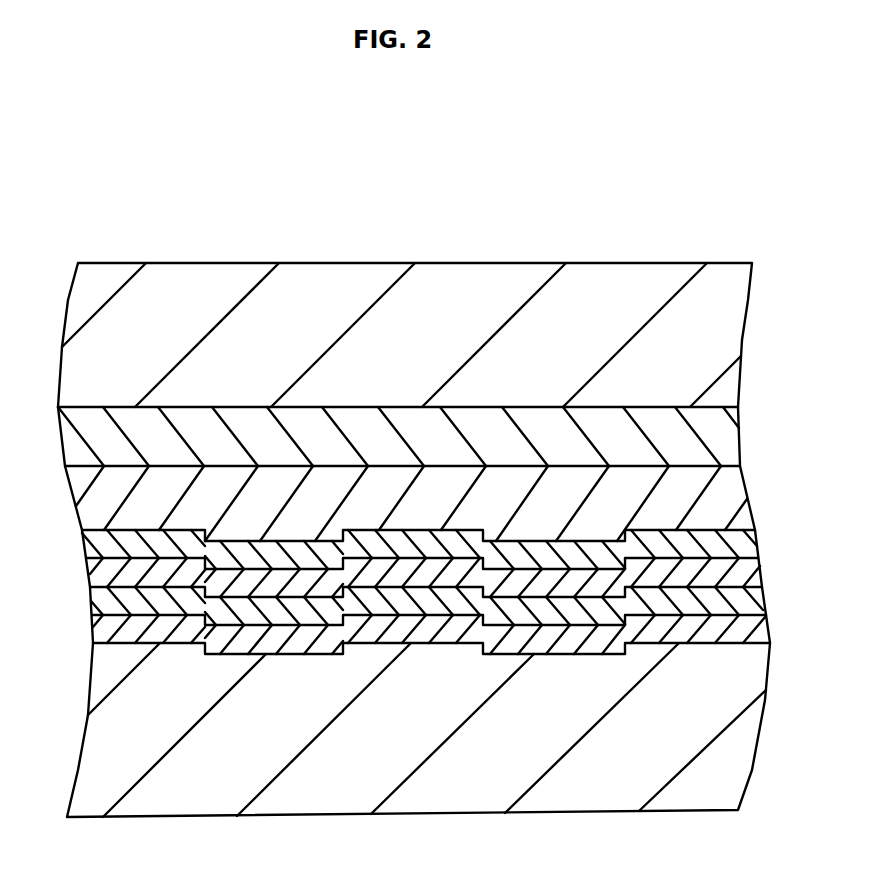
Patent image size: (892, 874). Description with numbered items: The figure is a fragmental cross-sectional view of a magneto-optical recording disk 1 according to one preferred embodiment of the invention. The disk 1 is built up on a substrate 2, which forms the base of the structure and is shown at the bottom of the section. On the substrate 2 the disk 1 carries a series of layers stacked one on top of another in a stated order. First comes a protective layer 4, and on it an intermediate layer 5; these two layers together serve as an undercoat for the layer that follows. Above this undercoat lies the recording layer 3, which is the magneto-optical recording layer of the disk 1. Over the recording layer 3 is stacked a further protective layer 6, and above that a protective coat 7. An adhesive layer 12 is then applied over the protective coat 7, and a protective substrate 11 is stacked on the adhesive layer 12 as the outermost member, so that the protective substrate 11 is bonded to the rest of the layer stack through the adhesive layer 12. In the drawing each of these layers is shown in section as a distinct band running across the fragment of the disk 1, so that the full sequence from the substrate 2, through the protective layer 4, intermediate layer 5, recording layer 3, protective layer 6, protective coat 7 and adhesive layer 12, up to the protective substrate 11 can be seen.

The magneto-optical recording disk 1 is at (484, 243).
The substrate 2 is at (692, 802).
The recording layer 3 is at (102, 575).
The protective layer 4 is at (103, 632).
The intermediate layer 5 is at (753, 603).
The protective layer 6 is at (748, 547).
The protective coat 7 is at (730, 497).
The protective substrate 11 is at (727, 340).
The adhesive layer 12 is at (730, 443).